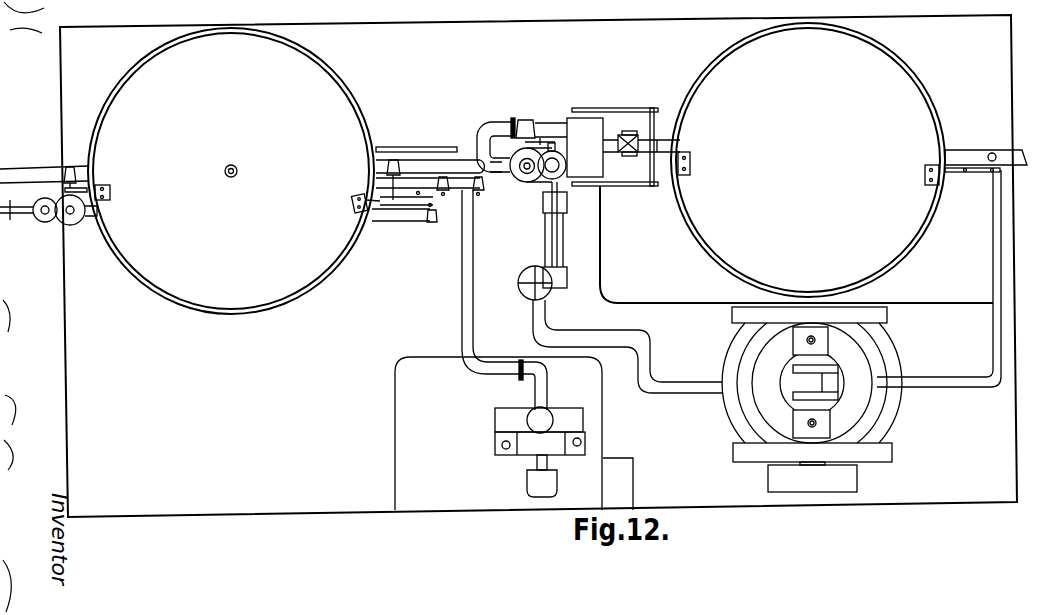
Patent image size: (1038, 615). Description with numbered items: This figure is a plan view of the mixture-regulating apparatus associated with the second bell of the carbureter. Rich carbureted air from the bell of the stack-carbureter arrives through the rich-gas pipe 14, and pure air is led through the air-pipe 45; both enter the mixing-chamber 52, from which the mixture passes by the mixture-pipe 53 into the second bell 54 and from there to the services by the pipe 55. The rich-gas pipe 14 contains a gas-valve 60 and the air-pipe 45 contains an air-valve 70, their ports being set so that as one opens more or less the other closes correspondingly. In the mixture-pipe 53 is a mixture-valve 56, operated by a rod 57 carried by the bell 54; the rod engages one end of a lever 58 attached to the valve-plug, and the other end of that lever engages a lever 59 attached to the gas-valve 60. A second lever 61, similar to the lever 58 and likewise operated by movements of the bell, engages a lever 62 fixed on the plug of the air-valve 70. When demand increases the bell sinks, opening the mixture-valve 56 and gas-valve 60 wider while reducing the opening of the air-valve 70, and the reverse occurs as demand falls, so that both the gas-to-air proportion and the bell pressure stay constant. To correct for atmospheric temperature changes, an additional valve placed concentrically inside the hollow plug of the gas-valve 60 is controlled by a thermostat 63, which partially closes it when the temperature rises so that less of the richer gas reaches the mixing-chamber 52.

The rich-gas pipe 14 is at (437, 170).
The air-pipe 45 is at (497, 126).
The air-valve 70 is at (532, 120).
The lever 62 is at (562, 116).
The lever 61 is at (622, 108).
The mixture-pipe 53 is at (664, 139).
The mixing-chamber 52 is at (585, 147).
The thermostat 63 is at (514, 172).
The gas-valve 60 is at (527, 180).
The lever 59 is at (567, 184).
The mixture-valve 56 is at (612, 186).
The lever 58 is at (650, 186).
The rod 57 is at (689, 172).
The second bell 54 is at (808, 160).
The service pipe 55 is at (977, 152).